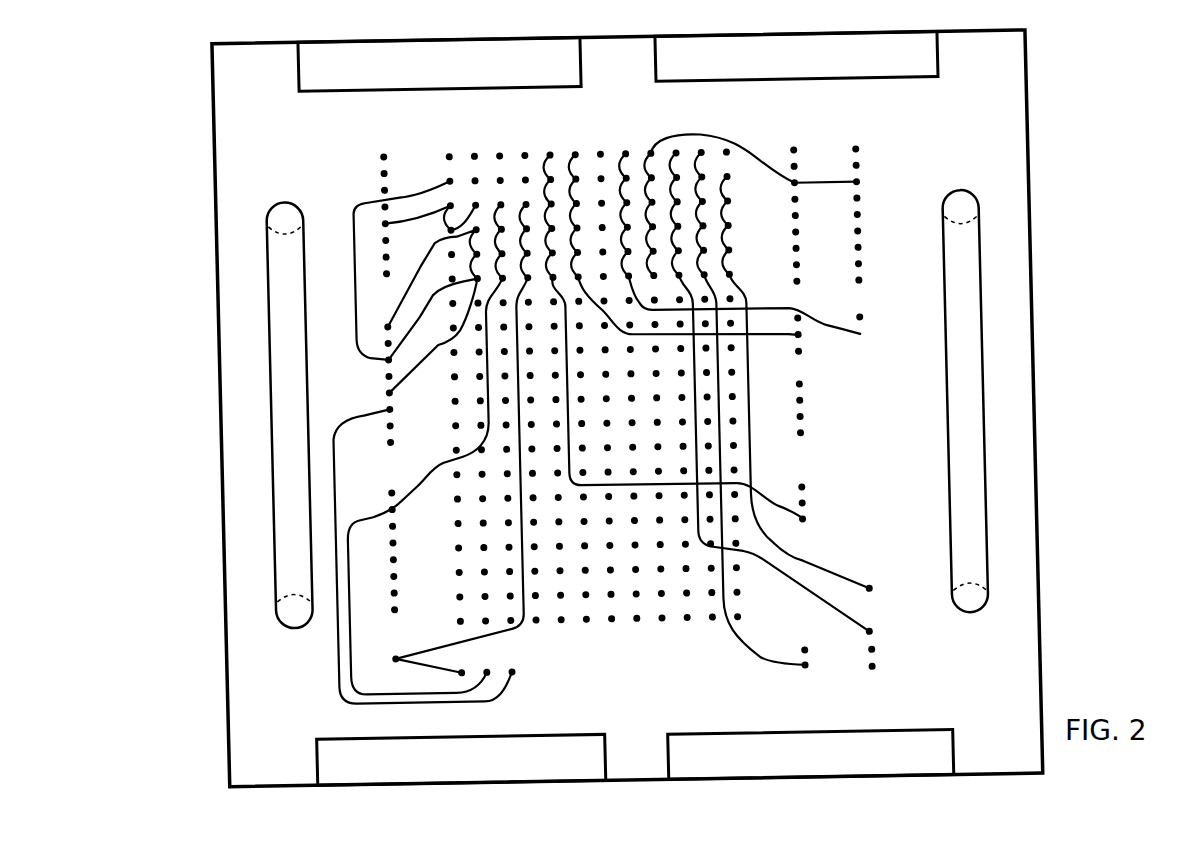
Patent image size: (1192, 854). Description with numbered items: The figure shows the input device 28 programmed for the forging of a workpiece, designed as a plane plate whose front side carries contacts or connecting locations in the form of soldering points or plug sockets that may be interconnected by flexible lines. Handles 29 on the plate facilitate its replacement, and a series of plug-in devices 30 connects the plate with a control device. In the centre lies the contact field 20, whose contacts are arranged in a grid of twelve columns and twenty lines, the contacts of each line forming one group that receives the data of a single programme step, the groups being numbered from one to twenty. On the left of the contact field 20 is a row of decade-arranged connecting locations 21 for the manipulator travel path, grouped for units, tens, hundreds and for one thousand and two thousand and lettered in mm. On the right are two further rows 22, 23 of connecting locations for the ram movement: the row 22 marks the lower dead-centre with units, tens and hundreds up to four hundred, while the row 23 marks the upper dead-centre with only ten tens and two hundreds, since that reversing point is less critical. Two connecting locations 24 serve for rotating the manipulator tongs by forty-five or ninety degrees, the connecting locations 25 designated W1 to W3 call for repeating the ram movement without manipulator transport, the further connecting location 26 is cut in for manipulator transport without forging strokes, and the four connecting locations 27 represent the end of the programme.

The contact field 20 is at (545, 630).
The connecting locations for the manipulator travel path 21 is at (391, 678).
The row of connecting locations for the lower dead-centre 22 is at (804, 539).
The row of connecting locations for the upper dead-centre 23 is at (871, 339).
The connecting locations for rotating the manipulator tongs 24 is at (751, 690).
The connecting locations W1 to W3 25 is at (876, 677).
The connecting location for manipulator transport without forging strokes 26 is at (871, 591).
The connecting locations for the end of the programme 27 is at (543, 701).
The input device 28 is at (203, 574).
The handles 29 is at (284, 382).
The plug-in devices 30 is at (313, 62).